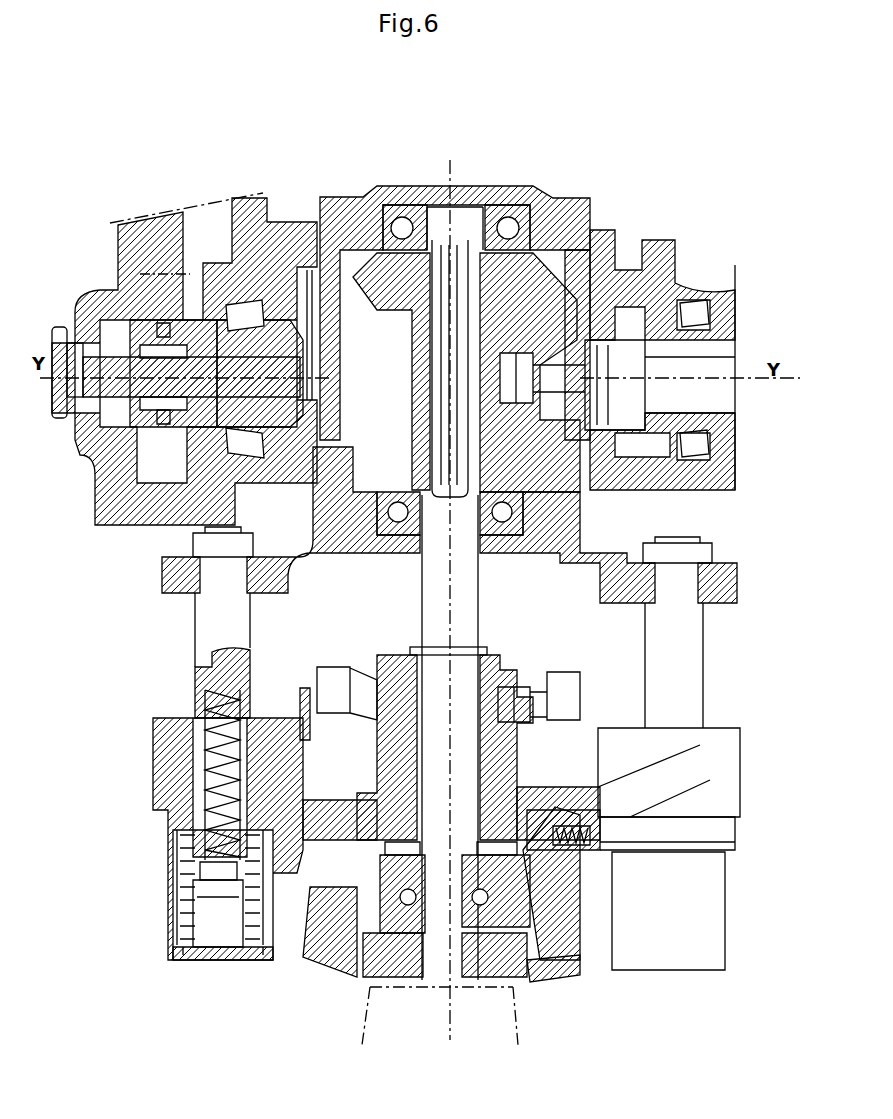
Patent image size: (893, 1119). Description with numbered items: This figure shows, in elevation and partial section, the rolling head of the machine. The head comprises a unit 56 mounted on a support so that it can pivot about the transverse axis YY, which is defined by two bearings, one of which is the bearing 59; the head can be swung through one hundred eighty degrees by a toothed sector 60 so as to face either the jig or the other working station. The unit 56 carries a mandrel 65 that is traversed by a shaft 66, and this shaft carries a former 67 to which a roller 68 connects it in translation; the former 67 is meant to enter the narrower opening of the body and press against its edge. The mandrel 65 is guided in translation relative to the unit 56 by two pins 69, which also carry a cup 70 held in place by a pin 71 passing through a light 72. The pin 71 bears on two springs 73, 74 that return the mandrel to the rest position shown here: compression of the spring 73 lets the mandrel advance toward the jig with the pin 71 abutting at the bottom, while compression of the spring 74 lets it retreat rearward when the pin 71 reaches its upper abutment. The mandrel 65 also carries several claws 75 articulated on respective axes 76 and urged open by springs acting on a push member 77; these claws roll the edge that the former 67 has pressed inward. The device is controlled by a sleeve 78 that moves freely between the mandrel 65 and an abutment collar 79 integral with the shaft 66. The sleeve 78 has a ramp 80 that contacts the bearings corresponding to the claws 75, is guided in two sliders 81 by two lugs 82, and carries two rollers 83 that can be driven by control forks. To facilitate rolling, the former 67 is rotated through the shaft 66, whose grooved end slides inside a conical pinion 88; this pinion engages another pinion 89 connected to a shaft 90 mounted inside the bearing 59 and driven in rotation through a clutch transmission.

The unit 56 is at (343, 213).
The bearing 59 is at (627, 327).
The toothed sector 60 is at (158, 237).
The mandrel 65 is at (313, 850).
The shaft 66 is at (463, 583).
The former 67 is at (498, 967).
The roller 68 is at (367, 942).
The pins 69 is at (685, 658).
The cup 70 is at (215, 948).
The pin 71 is at (205, 888).
The light 72 is at (190, 861).
The spring 73 is at (195, 920).
The spring 74 is at (210, 738).
The claws 75 is at (548, 963).
The axes 76 is at (570, 957).
The push member 77 is at (540, 830).
The sleeve 78 is at (490, 660).
The abutment collar 79 is at (447, 650).
The ramp 80 is at (612, 852).
The sliders 81 is at (197, 693).
The lugs 82 is at (215, 665).
The rollers 83 is at (333, 678).
The conical pinion 88 is at (520, 270).
The pinion 89 is at (595, 280).
The shaft 90 is at (683, 370).